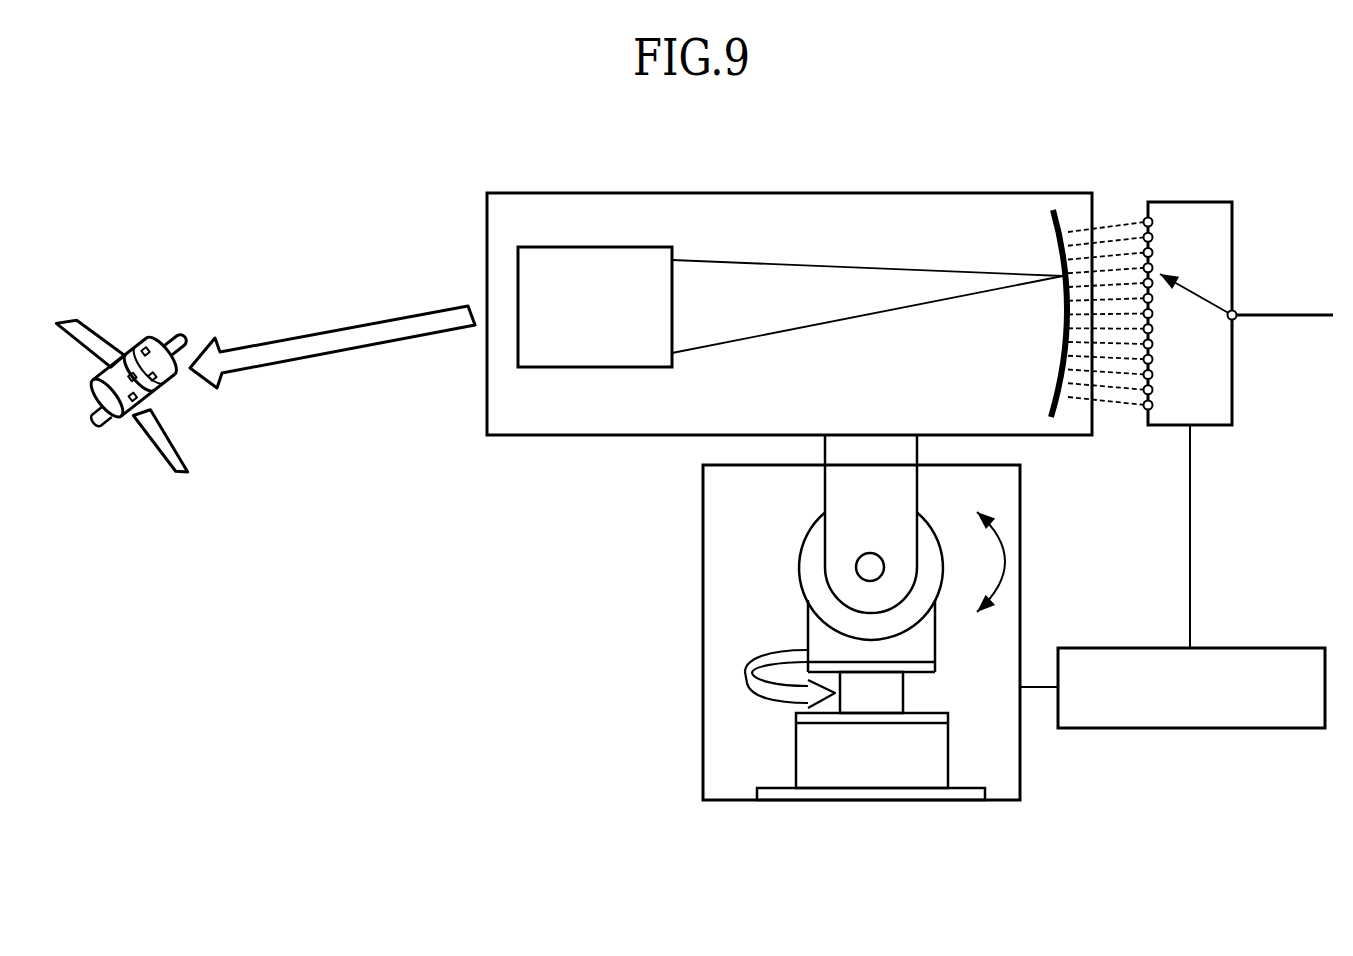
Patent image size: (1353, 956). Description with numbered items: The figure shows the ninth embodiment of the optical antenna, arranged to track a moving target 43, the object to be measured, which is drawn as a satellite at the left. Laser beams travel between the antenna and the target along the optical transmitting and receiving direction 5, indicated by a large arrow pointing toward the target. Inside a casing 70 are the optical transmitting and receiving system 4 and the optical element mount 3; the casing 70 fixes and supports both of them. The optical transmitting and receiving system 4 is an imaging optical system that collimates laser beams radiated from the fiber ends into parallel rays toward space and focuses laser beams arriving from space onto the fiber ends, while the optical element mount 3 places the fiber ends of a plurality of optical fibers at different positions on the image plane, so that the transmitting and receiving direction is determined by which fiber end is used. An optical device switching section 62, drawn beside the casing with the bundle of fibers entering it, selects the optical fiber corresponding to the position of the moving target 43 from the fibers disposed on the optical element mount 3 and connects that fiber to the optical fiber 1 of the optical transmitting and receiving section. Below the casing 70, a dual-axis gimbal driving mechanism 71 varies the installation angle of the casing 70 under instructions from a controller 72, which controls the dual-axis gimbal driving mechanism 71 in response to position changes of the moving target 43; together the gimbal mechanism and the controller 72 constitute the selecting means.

The moving target 43 is at (74, 312).
The optical transmitting and receiving direction 5 is at (345, 327).
The casing 70 is at (971, 192).
The optical transmitting and receiving system 4 is at (630, 370).
The optical element mount 3 is at (1051, 213).
The optical device switching section 62 is at (1203, 202).
The optical fiber 1 is at (1285, 313).
The dual-axis gimbal driving mechanism 71 is at (703, 518).
The controller 72 is at (1281, 648).